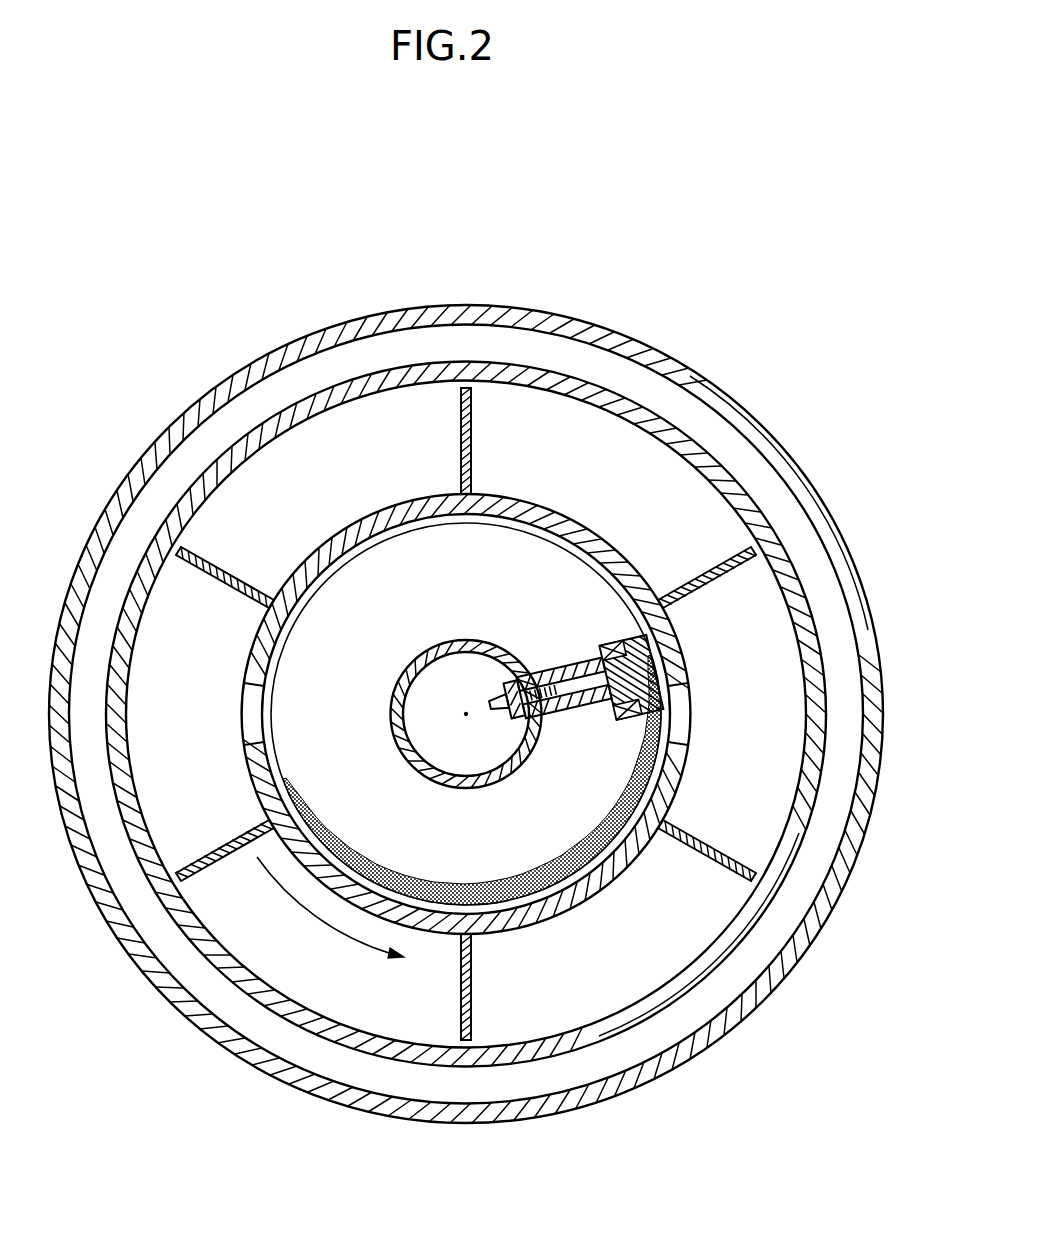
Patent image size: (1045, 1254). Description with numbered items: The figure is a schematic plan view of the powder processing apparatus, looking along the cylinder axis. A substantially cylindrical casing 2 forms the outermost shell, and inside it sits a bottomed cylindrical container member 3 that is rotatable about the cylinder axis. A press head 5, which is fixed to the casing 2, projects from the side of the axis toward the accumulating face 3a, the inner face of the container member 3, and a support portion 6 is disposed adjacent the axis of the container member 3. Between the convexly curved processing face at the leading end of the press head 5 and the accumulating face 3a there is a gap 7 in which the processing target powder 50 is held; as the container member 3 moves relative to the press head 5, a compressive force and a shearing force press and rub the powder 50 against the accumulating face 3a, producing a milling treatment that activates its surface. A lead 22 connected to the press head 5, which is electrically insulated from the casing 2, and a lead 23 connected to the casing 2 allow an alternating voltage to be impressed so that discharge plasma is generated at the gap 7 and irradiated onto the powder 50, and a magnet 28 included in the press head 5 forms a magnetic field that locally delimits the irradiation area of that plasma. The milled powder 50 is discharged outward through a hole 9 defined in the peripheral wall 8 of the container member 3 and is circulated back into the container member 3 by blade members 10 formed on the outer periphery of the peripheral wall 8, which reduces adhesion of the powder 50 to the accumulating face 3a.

The casing 2 is at (702, 374).
The lead 23 is at (840, 895).
The container member 3 is at (617, 536).
The accumulating face 3a is at (500, 525).
The press head 5 is at (645, 716).
The support portion 6 is at (397, 735).
The gap 7 is at (640, 637).
The peripheral wall 8 is at (598, 888).
The hole 9 is at (246, 716).
The blade member 10 is at (463, 427).
The lead 22 is at (465, 722).
The magnet 28 is at (608, 648).
The processing target powder 50 is at (480, 895).